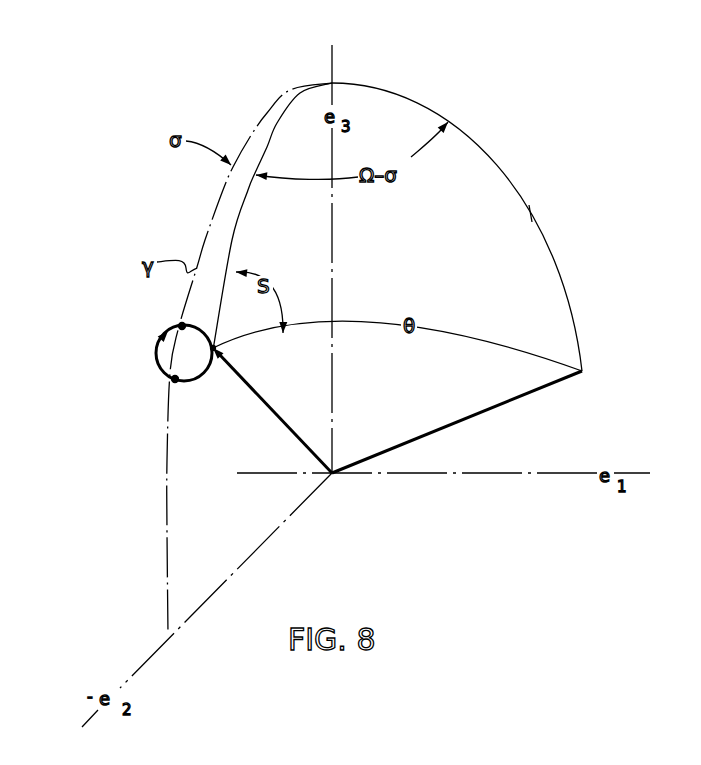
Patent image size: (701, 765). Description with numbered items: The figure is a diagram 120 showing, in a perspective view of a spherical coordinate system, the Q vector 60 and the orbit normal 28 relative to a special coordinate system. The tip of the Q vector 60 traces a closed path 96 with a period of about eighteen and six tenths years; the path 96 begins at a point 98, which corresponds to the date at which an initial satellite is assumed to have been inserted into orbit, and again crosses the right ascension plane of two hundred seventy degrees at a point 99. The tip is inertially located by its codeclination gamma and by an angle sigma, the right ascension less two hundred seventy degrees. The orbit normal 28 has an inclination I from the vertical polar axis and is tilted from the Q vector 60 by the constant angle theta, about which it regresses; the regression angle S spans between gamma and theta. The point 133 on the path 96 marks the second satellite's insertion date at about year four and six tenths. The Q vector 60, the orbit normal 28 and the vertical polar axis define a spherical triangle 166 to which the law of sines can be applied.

The diagram 120 is at (530, 158).
The spherical triangle 166 is at (572, 292).
The orbit normal 28 is at (523, 395).
The Q vector 60 is at (243, 380).
The path 96 is at (150, 358).
The point 98 is at (182, 326).
The point 99 is at (175, 379).
The point 133 is at (218, 352).